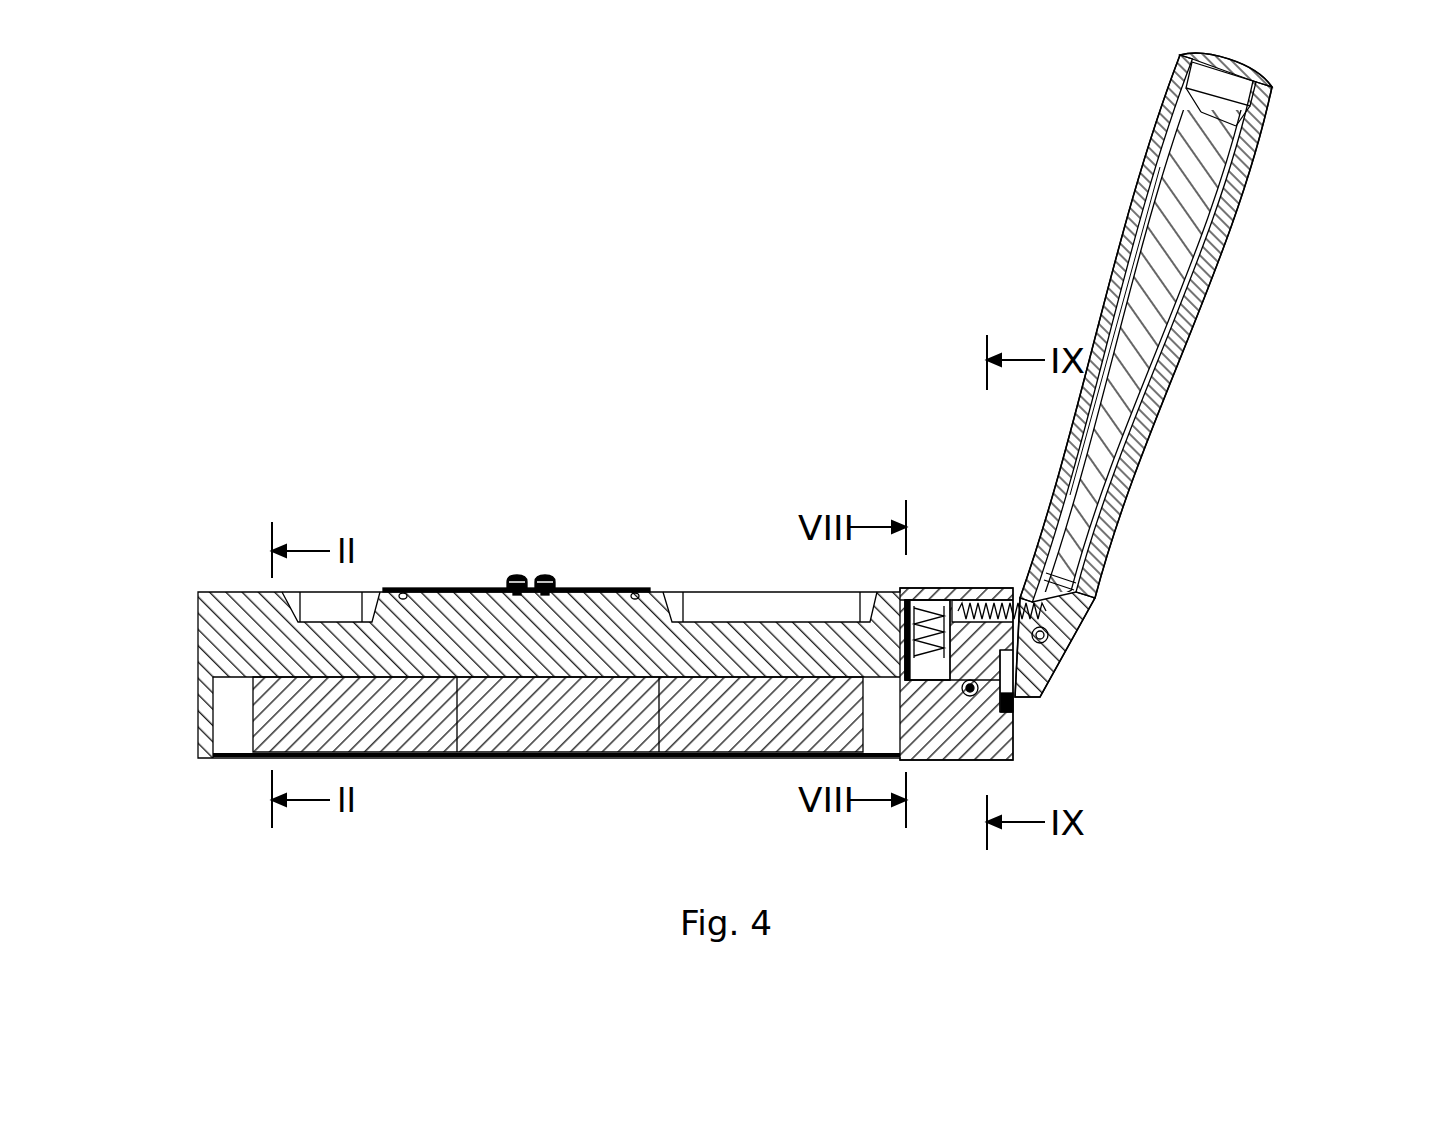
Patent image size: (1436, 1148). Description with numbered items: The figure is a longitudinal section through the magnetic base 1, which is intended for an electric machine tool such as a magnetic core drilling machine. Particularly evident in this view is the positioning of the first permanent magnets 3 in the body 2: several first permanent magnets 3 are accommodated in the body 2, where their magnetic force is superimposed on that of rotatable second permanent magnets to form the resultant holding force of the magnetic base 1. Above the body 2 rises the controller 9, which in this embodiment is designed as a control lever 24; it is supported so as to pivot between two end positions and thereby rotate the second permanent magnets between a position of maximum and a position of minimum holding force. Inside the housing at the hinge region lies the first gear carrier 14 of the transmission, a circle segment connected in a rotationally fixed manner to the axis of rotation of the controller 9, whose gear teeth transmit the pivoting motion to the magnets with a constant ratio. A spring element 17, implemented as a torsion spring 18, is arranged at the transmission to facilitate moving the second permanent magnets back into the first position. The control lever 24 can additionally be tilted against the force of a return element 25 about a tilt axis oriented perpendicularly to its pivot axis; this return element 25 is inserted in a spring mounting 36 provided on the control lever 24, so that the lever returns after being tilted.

The magnetic base 1 is at (669, 429).
The body 2 is at (437, 618).
The first permanent magnets 3 is at (775, 720).
The controller 9 is at (1047, 661).
The control lever 24 is at (1143, 375).
The first gear carrier 14 is at (995, 648).
The spring element 17 is at (918, 622).
The torsion spring 18 is at (927, 640).
The return element 25 is at (1068, 603).
The spring mounting 36 is at (1068, 628).